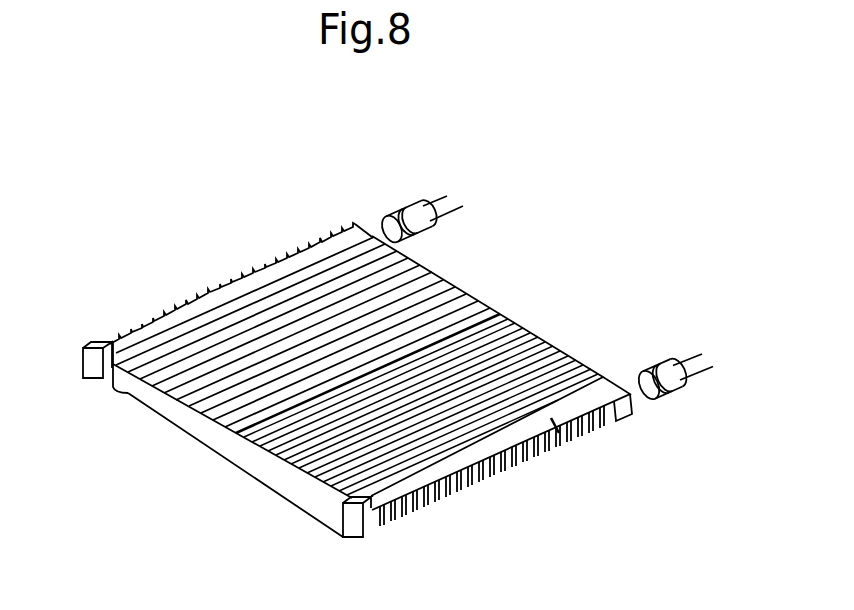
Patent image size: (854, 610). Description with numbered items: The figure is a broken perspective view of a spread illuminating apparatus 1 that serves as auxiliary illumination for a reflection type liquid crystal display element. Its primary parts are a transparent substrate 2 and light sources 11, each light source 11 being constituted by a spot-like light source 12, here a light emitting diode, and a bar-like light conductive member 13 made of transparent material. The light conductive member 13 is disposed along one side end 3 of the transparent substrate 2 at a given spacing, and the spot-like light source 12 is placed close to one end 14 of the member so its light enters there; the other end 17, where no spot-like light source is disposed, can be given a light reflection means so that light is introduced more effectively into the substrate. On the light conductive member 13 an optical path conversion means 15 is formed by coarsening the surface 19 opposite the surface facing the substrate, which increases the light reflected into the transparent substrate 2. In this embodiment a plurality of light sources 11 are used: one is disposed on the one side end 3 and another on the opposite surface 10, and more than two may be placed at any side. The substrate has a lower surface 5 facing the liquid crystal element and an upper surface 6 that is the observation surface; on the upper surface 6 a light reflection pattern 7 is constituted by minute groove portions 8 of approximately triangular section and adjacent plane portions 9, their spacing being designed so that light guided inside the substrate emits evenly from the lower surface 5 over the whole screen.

The spread illuminating apparatus 1 is at (108, 405).
The transparent substrate 2 is at (207, 440).
The one side end 3 is at (121, 389).
The lower surface 5 is at (253, 473).
The upper surface 6 is at (455, 295).
The light reflection pattern 7 is at (648, 253).
The groove portion 8 is at (597, 371).
The plane portion 9 is at (510, 312).
The opposite surface 10 is at (380, 480).
The light source 11 is at (417, 173).
The spot-like light source 12 is at (399, 219).
The light conductive member 13 is at (303, 262).
The one end 14 is at (400, 243).
The optical path conversion means 15 is at (210, 288).
The other end 17 is at (86, 351).
The surface opposite to the surface facing the substrate 19 is at (106, 340).